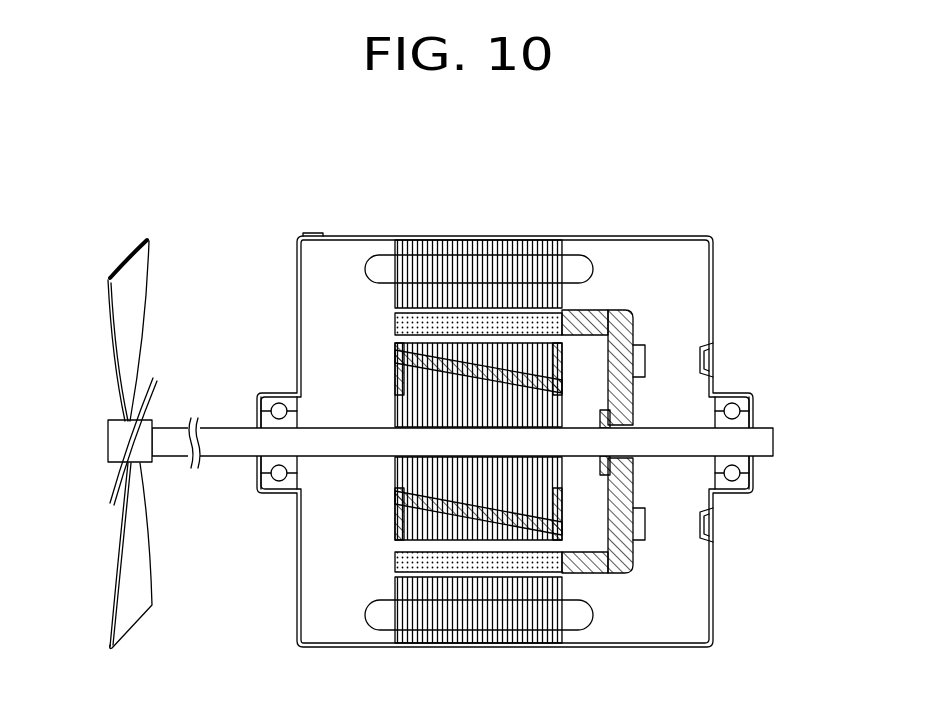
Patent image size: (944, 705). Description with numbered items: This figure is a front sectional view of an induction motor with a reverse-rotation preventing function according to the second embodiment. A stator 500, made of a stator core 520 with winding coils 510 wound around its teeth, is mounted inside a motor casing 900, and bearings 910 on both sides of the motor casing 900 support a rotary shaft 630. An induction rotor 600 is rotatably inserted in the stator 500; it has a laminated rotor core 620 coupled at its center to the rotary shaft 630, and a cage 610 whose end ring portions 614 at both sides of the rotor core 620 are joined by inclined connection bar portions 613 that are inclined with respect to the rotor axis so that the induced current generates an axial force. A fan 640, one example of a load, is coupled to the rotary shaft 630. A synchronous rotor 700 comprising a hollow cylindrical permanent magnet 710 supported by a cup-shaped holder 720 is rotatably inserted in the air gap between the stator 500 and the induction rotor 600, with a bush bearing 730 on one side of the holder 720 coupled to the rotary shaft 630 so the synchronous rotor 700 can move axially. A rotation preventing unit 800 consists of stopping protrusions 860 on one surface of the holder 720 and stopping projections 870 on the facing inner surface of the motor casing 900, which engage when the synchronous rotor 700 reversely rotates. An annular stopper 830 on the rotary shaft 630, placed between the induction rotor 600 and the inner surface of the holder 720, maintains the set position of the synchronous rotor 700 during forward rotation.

The stator 500 is at (459, 398).
The winding coils 510 is at (362, 252).
The stator core 520 is at (390, 251).
The induction rotor 600 is at (372, 450).
The cage 610 is at (392, 513).
The rotor core 620 is at (410, 545).
The inclined connection bar portions 613 is at (473, 518).
The end ring 614 is at (393, 374).
The rotary shaft 630 is at (773, 442).
The fan 640 is at (130, 258).
The synchronous rotor 700 is at (602, 359).
The permanent magnet 710 is at (533, 308).
The holder 720 is at (620, 300).
The bearing 730 is at (638, 511).
The rotation preventing unit 800 is at (740, 416).
The stopper 830 is at (615, 410).
The stopping protrusions 860 is at (638, 345).
The stopping projections 870 is at (713, 358).
The motor casing 900 is at (485, 236).
The bearings 910 is at (275, 398).